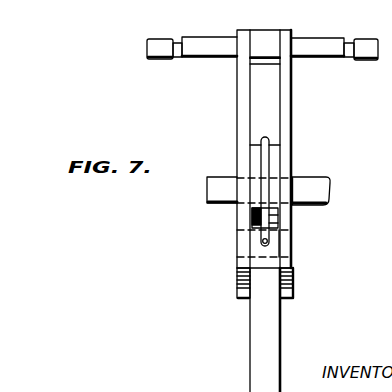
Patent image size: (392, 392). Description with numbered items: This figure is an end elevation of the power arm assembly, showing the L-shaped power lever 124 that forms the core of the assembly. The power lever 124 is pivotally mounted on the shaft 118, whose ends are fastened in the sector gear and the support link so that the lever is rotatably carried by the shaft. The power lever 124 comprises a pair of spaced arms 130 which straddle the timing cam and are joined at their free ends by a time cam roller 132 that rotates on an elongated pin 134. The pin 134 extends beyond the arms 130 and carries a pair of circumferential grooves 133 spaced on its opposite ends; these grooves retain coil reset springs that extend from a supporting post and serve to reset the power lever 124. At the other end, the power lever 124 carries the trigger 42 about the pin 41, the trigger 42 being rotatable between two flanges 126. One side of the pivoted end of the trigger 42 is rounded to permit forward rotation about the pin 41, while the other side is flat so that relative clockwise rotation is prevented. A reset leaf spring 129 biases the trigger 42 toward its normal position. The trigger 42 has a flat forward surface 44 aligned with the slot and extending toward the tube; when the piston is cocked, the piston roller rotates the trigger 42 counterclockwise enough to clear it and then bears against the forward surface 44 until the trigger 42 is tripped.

The spaced arms 130 is at (237, 100).
The time cam roller 132 is at (268, 27).
The circumferential grooves 133 is at (177, 41).
The elongated pin 134 is at (147, 48).
The reset leaf spring 129 is at (268, 156).
The shaft 118 is at (207, 204).
The power lever 124 is at (228, 258).
The pin 41 is at (292, 244).
The flanges 126 is at (237, 283).
The trigger 42 is at (250, 342).
The flat forward surface 44 is at (275, 347).